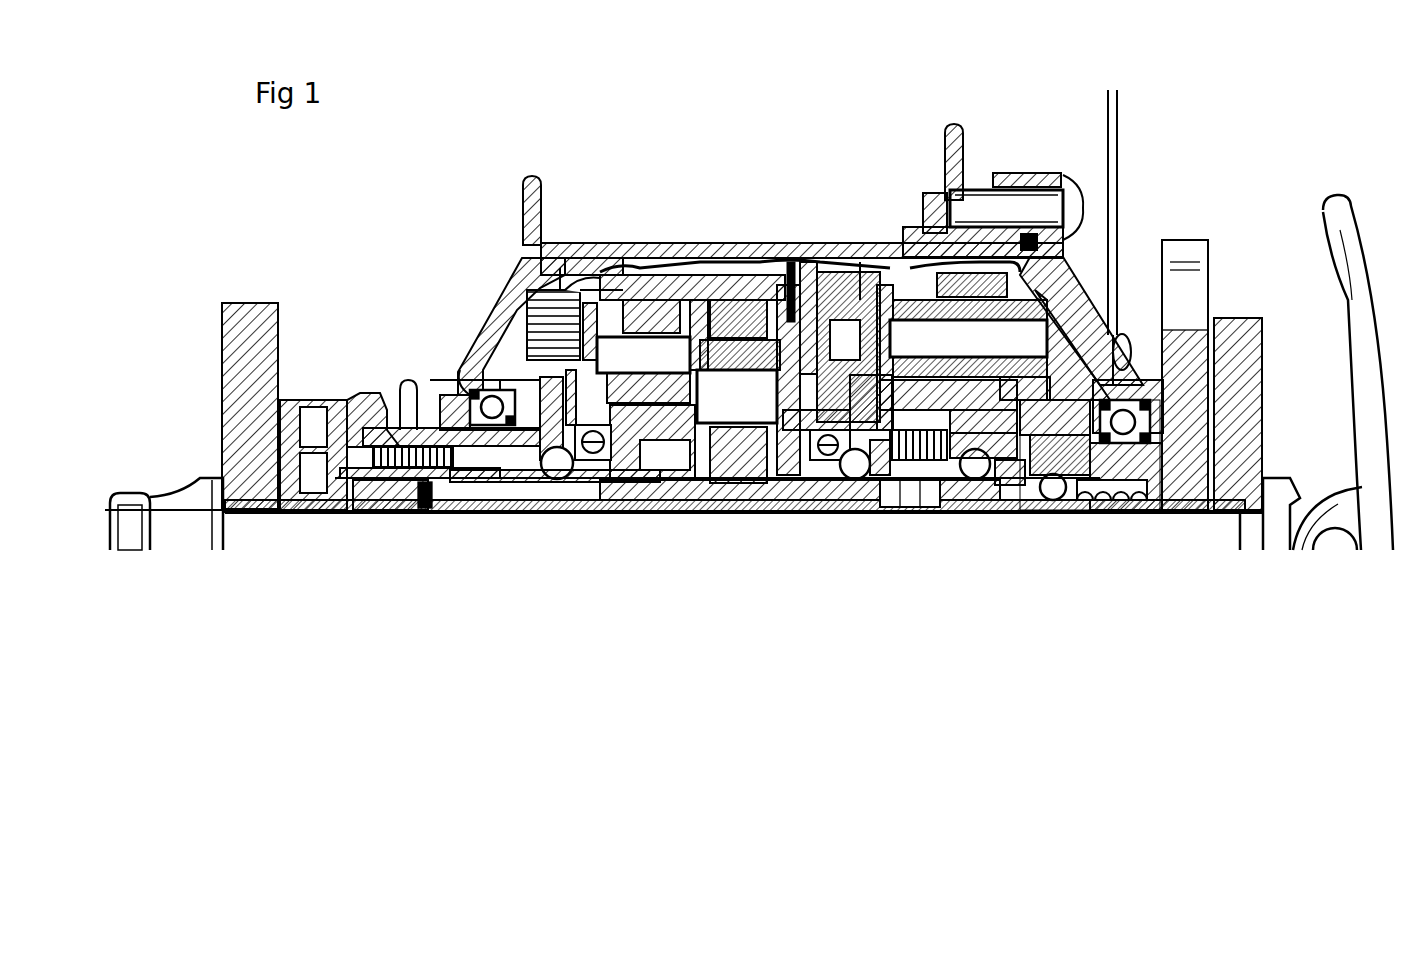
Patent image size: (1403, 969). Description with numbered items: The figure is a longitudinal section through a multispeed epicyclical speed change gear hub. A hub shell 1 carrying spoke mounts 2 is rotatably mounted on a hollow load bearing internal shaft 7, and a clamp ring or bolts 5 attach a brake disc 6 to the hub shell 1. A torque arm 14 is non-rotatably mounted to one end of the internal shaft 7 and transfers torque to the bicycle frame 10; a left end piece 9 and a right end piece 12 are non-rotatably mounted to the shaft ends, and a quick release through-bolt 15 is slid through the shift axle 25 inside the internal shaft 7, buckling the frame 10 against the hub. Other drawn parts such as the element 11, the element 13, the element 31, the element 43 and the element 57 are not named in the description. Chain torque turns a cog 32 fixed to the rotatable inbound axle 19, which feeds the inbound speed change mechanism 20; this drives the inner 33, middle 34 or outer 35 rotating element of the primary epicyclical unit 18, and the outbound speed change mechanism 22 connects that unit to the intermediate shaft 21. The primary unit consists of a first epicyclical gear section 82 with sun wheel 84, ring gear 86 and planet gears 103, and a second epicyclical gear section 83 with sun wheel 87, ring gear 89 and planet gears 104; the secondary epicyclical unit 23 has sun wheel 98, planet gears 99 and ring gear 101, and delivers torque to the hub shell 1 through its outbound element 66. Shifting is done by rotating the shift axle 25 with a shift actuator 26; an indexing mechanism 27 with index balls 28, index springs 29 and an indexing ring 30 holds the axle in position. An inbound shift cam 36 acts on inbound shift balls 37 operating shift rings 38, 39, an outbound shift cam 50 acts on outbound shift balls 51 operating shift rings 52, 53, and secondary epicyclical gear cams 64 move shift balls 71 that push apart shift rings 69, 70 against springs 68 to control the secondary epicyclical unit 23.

The hub shell 1 is at (520, 270).
The spoke mounts 2 is at (523, 200).
The clamp ring or bolts 5 is at (1145, 355).
The brake disc 6 is at (1117, 125).
The internal shaft 7 is at (677, 515).
The left end piece 9 is at (1185, 507).
The bicycle frame 10 is at (222, 335).
The axle nut 11 is at (1245, 480).
The right end piece 12 is at (312, 407).
The shift actuator 26 is at (313, 455).
The left nut 13 is at (245, 492).
The torque arm 14 is at (1195, 290).
The quick release through-bolt 15 is at (1235, 532).
The primary epicyclical unit 18 is at (532, 103).
The inbound axle 19 is at (432, 400).
The inbound speed change mechanism 20 is at (590, 272).
The intermediate shaft 21 is at (907, 345).
The outbound speed change mechanism 22 is at (823, 288).
The secondary epicyclical unit 23 is at (965, 70).
The shift axle 25 is at (725, 515).
The indexing mechanism 27 is at (1025, 660).
The index balls 28 is at (1068, 515).
The index springs 29 is at (1100, 515).
The indexing ring 30 is at (1042, 515).
The brake shell 31 is at (478, 515).
The cog 32 is at (408, 380).
The inner rotating element 33 is at (717, 275).
The middle rotating element 34 is at (683, 300).
The outer rotating element 35 is at (641, 265).
The inbound shift cam 36 is at (568, 515).
The inbound shift balls 37 is at (577, 515).
The shift ring 38 is at (548, 515).
The shift ring 39 is at (612, 515).
The bushing 43 is at (520, 515).
The outbound shift cam 50 is at (850, 515).
The outbound shift balls 51 is at (855, 515).
The shift ring 52 is at (868, 515).
The shift ring 53 is at (805, 515).
The spring 57 is at (897, 515).
The springs 68 is at (918, 445).
The secondary epicyclical gear cams 64 is at (960, 515).
The outbound element 66 is at (905, 350).
The shift ring 69 is at (943, 515).
The shift ring 70 is at (1010, 515).
The shift balls 71 is at (985, 515).
The first epicyclical gear section 82 is at (648, 148).
The second epicyclical gear section 83 is at (748, 140).
The sun wheel 84 is at (637, 515).
The ring gear 86 is at (613, 283).
The sun wheel 87 is at (765, 515).
The ring gear 89 is at (737, 280).
The sun wheel 98 is at (917, 515).
The planet gears 99 is at (1038, 270).
The ring gear 101 is at (967, 268).
The planet gears 103 is at (668, 300).
The planet gears 104 is at (788, 300).